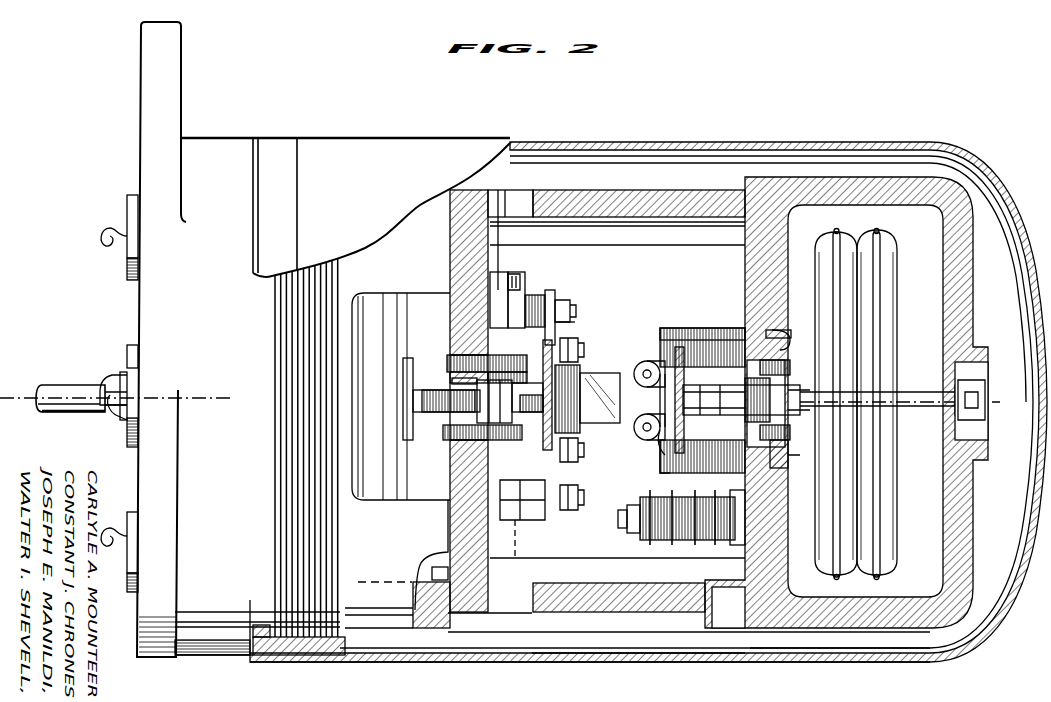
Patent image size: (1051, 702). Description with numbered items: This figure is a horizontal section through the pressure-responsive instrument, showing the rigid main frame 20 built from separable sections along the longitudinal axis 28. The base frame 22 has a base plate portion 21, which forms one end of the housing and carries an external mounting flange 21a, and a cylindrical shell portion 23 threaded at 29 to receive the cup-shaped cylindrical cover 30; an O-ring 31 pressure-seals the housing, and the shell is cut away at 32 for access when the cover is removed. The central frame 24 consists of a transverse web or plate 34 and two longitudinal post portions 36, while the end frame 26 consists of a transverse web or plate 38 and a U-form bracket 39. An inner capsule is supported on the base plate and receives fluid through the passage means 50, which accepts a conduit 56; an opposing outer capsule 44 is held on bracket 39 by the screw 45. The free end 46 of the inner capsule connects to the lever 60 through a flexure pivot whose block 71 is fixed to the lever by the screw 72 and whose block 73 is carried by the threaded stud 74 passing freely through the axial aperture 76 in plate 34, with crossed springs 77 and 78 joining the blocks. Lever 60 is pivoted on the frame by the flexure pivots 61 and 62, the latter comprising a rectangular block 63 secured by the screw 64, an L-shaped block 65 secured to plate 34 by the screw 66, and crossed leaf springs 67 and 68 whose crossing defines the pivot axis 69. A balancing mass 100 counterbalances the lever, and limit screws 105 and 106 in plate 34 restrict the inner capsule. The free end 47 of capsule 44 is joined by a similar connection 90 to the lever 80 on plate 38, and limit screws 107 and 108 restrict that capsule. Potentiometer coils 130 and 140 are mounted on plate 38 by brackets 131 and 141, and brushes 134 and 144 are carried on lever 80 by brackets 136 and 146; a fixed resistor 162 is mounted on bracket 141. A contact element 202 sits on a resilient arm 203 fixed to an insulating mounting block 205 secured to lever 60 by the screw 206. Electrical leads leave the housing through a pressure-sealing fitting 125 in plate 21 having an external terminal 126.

The main frame 20 is at (445, 632).
The base plate portion 21 is at (138, 307).
The external mounting flange 21a is at (183, 64).
The base frame 22 is at (385, 622).
The cylindrical shell portion 23 is at (392, 573).
The central frame 24 is at (648, 618).
The end frame 26 is at (888, 638).
The longitudinal axis 28 is at (14, 395).
The threads 29 is at (290, 645).
The cylindrical cover 30 is at (484, 662).
The O-ring 31 is at (250, 657).
The cut-away portion 32 is at (405, 500).
The transverse web or plate 34 is at (458, 470).
The post portions 36 is at (580, 613).
The transverse web or plate 38 is at (770, 570).
The bracket 39 is at (975, 308).
The outer capsule 44 is at (898, 528).
The screw 45 is at (980, 418).
The free end 46 is at (426, 352).
The free end 47 is at (803, 460).
The passage means 50 is at (112, 380).
The conduit 56 is at (44, 416).
The lever 60 is at (555, 292).
The flexure pivot 61 is at (543, 510).
The flexure pivot 62 is at (551, 288).
The rectangular block 63 is at (572, 322).
The screw 64 is at (572, 309).
The L-shaped block 65 is at (470, 284).
The screw 66 is at (520, 282).
The leaf spring 67 is at (506, 322).
The leaf spring 68 is at (524, 322).
The pivot axis 69 is at (520, 543).
The block 71 is at (533, 420).
The screw 72 is at (585, 420).
The block 73 is at (494, 401).
The threaded stud 74 is at (448, 412).
The axial aperture 76 is at (455, 381).
The leaf spring 77 is at (518, 420).
The leaf spring 78 is at (522, 370).
The lever 80 is at (672, 328).
The connection 90 is at (718, 355).
The balancing mass 100 is at (543, 360).
The limit screw 105 is at (448, 440).
The limit screw 106 is at (445, 360).
The limit screw 107 is at (702, 456).
The limit screw 108 is at (800, 332).
The pressure sealing fitting 125 is at (127, 270).
The external electrical terminal 126 is at (100, 246).
The potentiometer coil 130 is at (702, 332).
The bracket 131 is at (792, 330).
The brush 134 is at (686, 350).
The bracket 136 is at (650, 365).
The potentiometer coil 140 is at (668, 470).
The bracket 141 is at (745, 484).
The brush 144 is at (688, 497).
The bracket 146 is at (655, 448).
The fixed resistor 162 is at (648, 538).
The contact element 202 is at (622, 402).
The resilient arm 203 is at (608, 372).
The mounting block 205 is at (580, 445).
The screw 206 is at (584, 348).